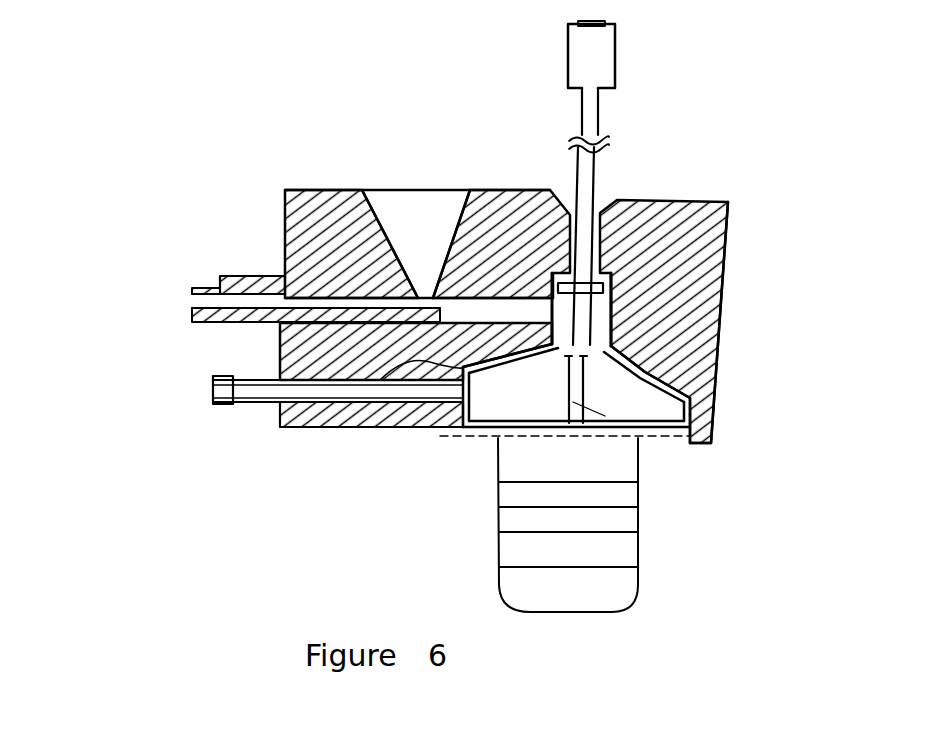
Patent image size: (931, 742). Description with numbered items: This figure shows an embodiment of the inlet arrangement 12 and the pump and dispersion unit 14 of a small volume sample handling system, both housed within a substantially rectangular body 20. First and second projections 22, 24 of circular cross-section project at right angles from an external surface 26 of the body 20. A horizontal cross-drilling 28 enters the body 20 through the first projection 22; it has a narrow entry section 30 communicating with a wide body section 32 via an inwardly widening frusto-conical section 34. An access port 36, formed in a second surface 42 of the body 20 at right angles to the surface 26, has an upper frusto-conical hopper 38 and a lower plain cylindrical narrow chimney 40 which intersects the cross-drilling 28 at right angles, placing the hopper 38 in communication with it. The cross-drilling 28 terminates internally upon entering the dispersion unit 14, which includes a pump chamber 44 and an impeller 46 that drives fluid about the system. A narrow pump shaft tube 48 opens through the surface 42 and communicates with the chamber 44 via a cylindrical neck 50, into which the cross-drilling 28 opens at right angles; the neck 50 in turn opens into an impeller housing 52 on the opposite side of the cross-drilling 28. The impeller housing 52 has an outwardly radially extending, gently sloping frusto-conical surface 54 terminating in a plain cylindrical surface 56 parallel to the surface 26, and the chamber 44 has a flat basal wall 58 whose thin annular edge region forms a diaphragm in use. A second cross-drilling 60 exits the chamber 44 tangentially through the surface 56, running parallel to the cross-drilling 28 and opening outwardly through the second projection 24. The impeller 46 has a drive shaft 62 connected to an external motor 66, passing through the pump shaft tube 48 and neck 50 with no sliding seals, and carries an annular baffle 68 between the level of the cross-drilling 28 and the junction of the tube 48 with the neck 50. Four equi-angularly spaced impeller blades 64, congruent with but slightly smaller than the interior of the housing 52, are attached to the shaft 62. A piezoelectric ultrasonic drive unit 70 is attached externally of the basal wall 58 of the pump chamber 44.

The inlet arrangement 12 is at (360, 176).
The pump and dispersion unit 14 is at (712, 423).
The body 20 is at (703, 297).
The first projection 22 is at (214, 284).
The second projection 24 is at (233, 403).
The external surface 26 is at (280, 353).
The cross-drilling 28 is at (298, 298).
The narrow entry section 30 is at (190, 298).
The wide body section 32 is at (343, 300).
The frusto-conical section 34 is at (193, 312).
The access port 36 is at (446, 206).
The frusto-conical hopper 38 is at (380, 218).
The chimney 40 is at (500, 205).
The second surface 42 is at (318, 192).
The pump chamber 44 is at (600, 323).
The impeller 46 is at (493, 401).
The pump shaft tube 48 is at (645, 200).
The neck 50 is at (552, 275).
The impeller housing 52 is at (636, 372).
The frusto-conical surface 54 is at (395, 396).
The cylindrical surface 56 is at (688, 408).
The basal wall 58 is at (477, 437).
The second cross-drilling 60 is at (288, 395).
The drive shaft 62 is at (597, 153).
The impeller blades 64 is at (653, 412).
The motor 66 is at (580, 62).
The annular baffle 68 is at (600, 247).
The piezoelectric ultrasonic drive unit 70 is at (555, 535).